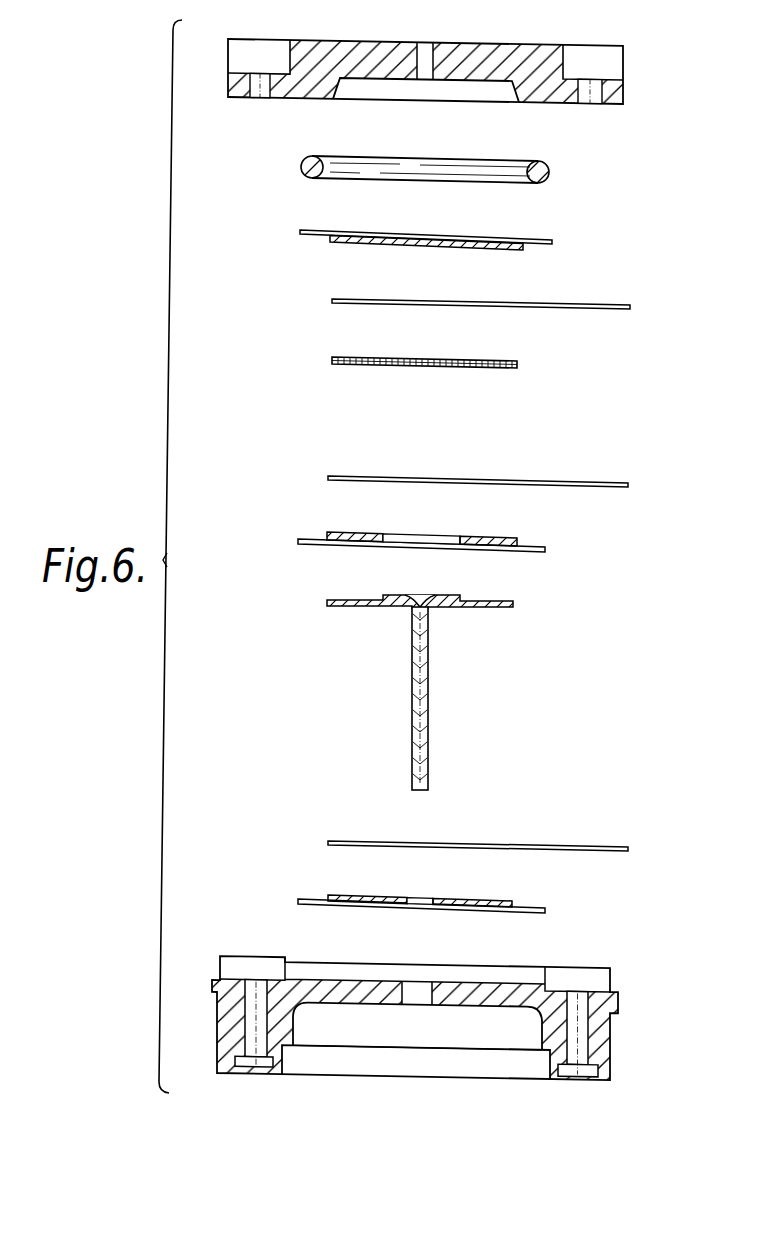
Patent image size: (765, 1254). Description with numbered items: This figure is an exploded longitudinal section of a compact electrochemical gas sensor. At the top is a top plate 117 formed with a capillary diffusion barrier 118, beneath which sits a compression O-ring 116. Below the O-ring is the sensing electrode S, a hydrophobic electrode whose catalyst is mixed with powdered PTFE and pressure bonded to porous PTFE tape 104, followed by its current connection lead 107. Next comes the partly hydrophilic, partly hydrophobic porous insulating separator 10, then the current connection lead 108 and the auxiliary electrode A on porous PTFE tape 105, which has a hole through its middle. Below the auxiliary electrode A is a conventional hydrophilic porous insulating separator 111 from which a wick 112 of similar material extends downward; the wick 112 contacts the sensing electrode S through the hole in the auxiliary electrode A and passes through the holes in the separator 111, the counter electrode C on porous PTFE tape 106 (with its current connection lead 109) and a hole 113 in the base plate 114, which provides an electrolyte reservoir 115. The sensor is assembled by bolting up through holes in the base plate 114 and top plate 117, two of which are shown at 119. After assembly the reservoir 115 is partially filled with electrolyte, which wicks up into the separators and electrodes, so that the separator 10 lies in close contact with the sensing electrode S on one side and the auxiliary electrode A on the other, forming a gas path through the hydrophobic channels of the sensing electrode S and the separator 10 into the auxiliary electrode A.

The porous insulating separator 10 is at (518, 362).
The porous PTFE tape 104 is at (550, 237).
The sensing electrode S is at (527, 244).
The porous PTFE tape 105 is at (548, 545).
The auxiliary electrode A is at (513, 536).
The porous PTFE tape 106 is at (540, 910).
The counter electrode C is at (510, 899).
The current connection lead 107 is at (630, 300).
The current connection lead 108 is at (608, 480).
The current connection lead 109 is at (548, 843).
The hydrophilic porous insulating separator 111 is at (513, 604).
The wick 112 is at (428, 700).
The hole in base plate 113 is at (418, 988).
The base plate 114 is at (610, 1028).
The electrolyte reservoir 115 is at (436, 1039).
The compression O-ring 116 is at (549, 174).
The top plate 117 is at (531, 27).
The capillary diffusion barrier 118 is at (428, 47).
The bolt holes 119 is at (258, 72).